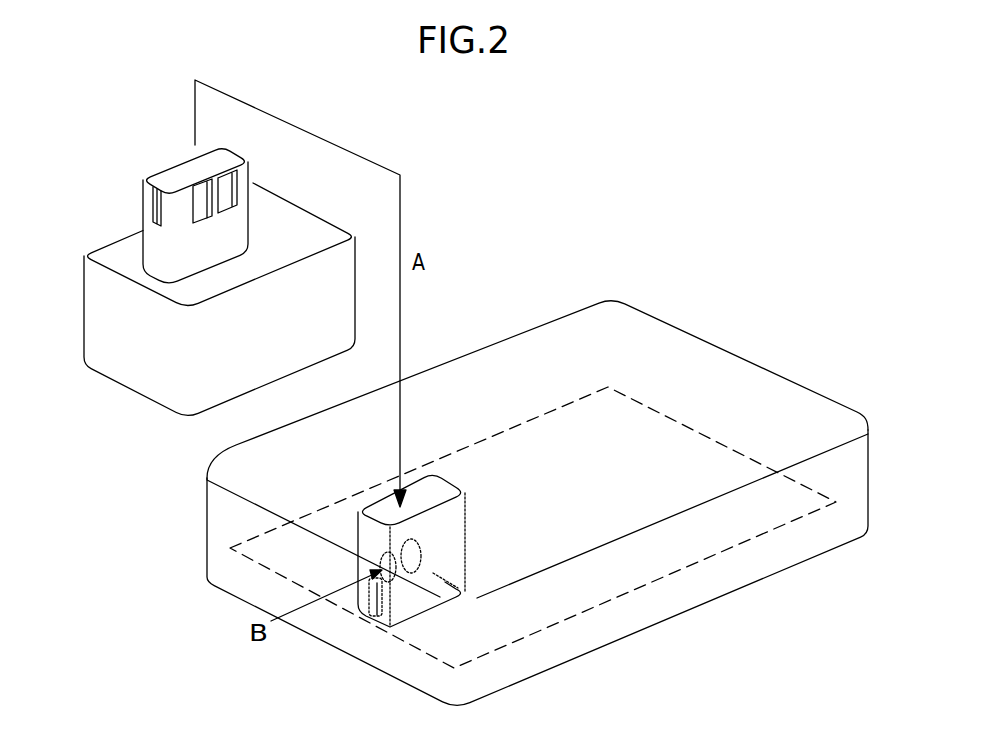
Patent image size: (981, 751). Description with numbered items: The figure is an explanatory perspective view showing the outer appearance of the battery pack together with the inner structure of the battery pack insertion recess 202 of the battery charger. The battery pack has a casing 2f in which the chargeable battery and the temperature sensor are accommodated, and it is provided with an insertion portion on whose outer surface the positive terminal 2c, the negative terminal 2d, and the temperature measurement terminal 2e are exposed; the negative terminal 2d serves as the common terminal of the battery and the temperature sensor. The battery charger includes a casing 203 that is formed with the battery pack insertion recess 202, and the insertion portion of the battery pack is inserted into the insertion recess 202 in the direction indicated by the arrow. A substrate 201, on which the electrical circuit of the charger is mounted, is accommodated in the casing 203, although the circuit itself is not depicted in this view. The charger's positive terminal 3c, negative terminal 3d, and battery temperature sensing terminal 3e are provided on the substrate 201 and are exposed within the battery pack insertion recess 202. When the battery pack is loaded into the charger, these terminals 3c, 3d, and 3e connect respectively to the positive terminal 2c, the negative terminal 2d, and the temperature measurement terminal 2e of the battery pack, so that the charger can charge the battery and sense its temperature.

The positive terminal 2c is at (240, 185).
The negative terminal 2d is at (203, 188).
The temperature measurement terminal 2e is at (148, 177).
The casing 2f is at (102, 247).
The substrate 201 is at (660, 458).
The battery pack insertion recess 202 is at (430, 488).
The casing 203 is at (652, 325).
The positive terminal 3c is at (413, 540).
The negative terminal 3d is at (391, 548).
The battery temperature sensing terminal 3e is at (374, 604).